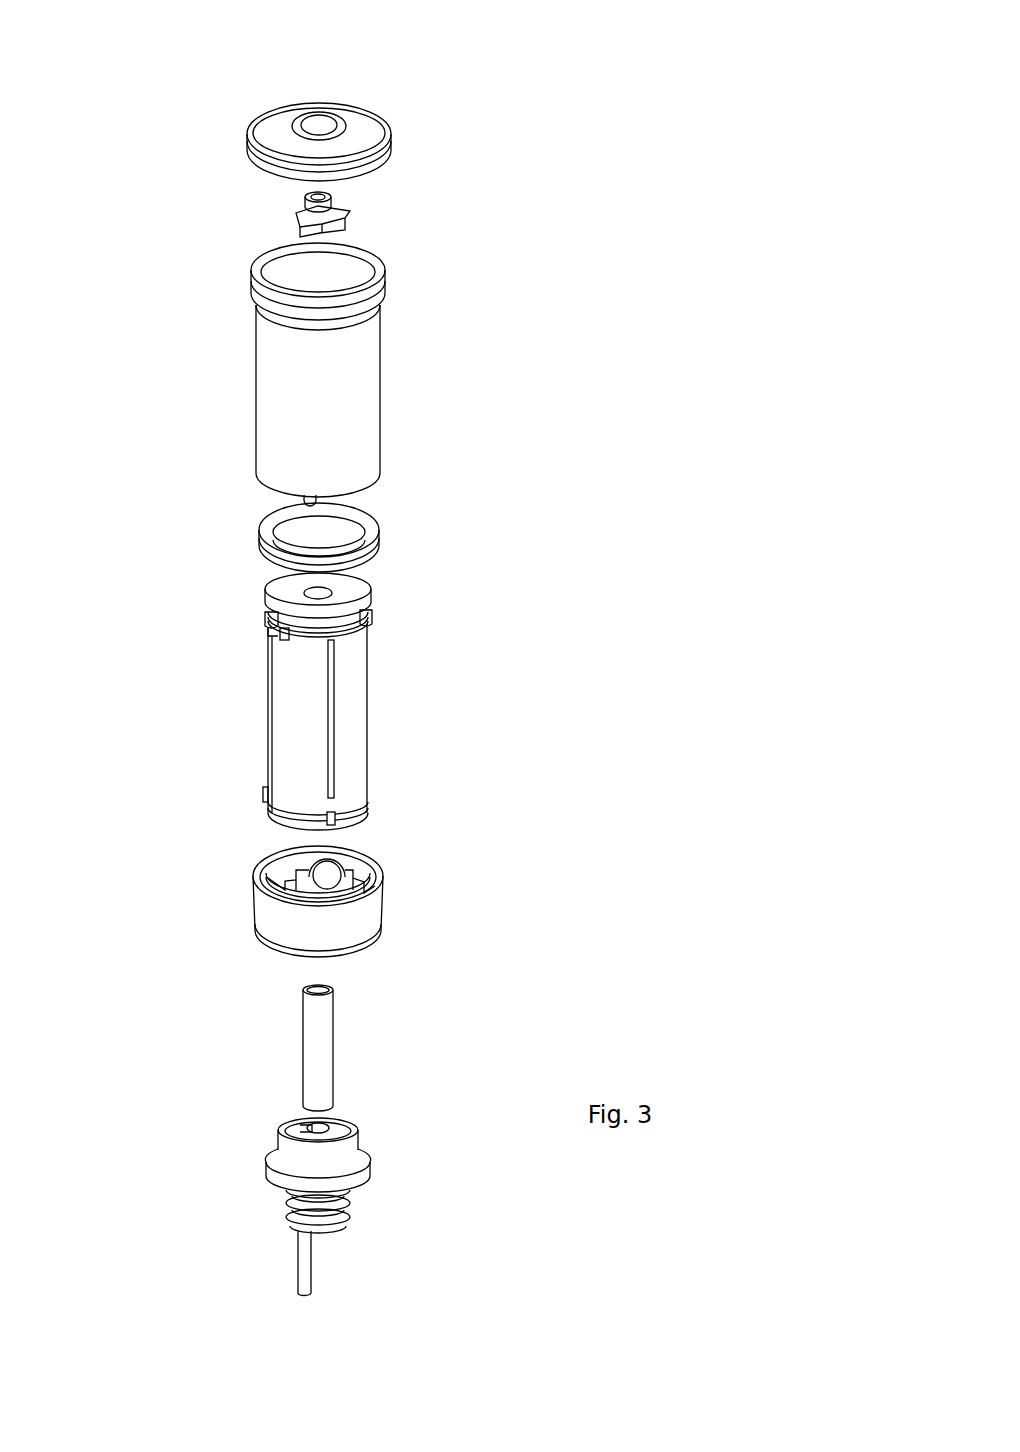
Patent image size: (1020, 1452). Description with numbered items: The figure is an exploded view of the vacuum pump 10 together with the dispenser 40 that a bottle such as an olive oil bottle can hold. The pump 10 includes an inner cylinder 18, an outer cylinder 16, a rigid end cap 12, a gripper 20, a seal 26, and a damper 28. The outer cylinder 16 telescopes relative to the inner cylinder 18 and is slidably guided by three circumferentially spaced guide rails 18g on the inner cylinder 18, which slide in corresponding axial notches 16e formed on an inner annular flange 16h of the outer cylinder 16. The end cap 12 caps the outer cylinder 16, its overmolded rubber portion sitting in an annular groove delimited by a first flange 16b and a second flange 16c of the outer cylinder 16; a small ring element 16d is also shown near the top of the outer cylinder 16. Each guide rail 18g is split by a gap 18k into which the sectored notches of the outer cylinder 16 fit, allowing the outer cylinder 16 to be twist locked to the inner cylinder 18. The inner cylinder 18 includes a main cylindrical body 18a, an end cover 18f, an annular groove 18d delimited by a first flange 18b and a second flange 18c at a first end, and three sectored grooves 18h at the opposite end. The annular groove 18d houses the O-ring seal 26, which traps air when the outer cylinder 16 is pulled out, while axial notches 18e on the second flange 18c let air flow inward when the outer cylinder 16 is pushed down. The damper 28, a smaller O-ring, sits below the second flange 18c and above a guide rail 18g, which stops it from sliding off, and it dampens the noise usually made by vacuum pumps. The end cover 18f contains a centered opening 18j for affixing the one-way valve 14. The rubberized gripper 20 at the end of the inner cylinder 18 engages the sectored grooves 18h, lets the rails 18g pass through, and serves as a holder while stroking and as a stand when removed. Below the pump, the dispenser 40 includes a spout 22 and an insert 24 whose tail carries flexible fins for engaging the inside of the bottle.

The vacuum pump 10 is at (487, 937).
The end cap 12 is at (405, 110).
The one-way valve 14 is at (366, 208).
The outer cylinder 16 is at (275, 351).
The first flange 16b is at (250, 277).
The second flange 16c is at (380, 300).
The container upper ring 16d is at (288, 258).
The axial notches 16e is at (298, 497).
The inner annular flange 16h is at (263, 305).
The inner cylinder 18 is at (342, 674).
The main cylindrical body 18a is at (362, 755).
The first flange 18b is at (262, 594).
The second flange 18c is at (267, 622).
The annular groove 18d is at (268, 613).
The axial notches 18e is at (282, 640).
The end cover 18f is at (358, 588).
The guide rails 18g is at (335, 668).
The sectored grooves 18h is at (345, 813).
The centered opening 18j is at (332, 594).
The gap 18k is at (331, 807).
The gripper 20 is at (416, 904).
The spout 22 is at (379, 1040).
The insert 24 is at (389, 1167).
The seal 26 is at (370, 525).
The damper 28 is at (262, 538).
The dispenser 40 is at (247, 1282).